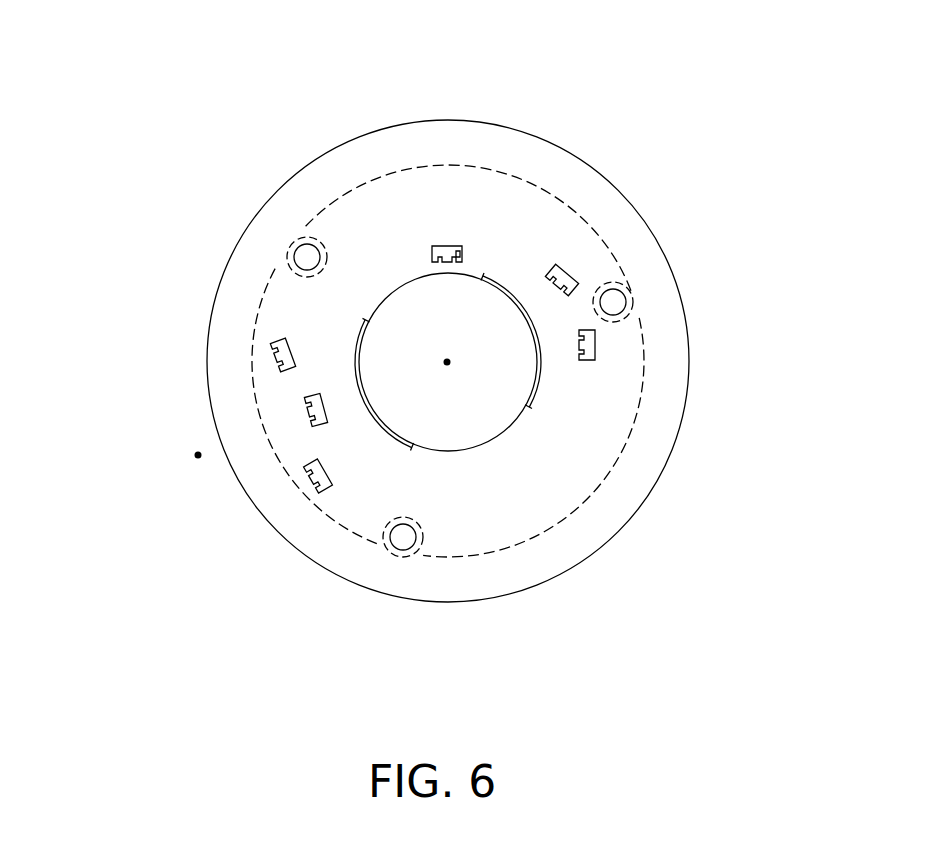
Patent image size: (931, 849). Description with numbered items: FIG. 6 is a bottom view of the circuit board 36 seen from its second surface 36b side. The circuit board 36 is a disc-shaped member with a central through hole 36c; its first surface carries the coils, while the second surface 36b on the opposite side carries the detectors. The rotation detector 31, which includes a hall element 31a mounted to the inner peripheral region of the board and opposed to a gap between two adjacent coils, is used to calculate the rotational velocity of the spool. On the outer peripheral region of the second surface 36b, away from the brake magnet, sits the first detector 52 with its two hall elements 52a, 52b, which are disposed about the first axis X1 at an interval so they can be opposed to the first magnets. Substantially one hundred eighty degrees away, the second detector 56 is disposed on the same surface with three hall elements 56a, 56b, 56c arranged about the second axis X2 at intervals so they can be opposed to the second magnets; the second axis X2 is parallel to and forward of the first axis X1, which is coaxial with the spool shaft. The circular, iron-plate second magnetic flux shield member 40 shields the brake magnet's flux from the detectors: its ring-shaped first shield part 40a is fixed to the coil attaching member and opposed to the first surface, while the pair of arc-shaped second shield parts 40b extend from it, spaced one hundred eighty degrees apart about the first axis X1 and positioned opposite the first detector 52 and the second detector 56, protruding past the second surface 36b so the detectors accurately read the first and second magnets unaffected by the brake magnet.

The circuit board 36 is at (645, 552).
The second surface 36b is at (614, 488).
The through hole 36c is at (392, 293).
The second magnetic flux shield member 40 is at (308, 162).
The first shield part 40a is at (545, 182).
The second shield parts 40b is at (360, 358).
The rotation detector 31 is at (440, 243).
The hall element 31a is at (457, 243).
The first detector 52 is at (737, 174).
The hall element 52a is at (570, 273).
The hall element 52b is at (590, 337).
The second detector 56 is at (126, 347).
The hall element 56a is at (275, 353).
The hall element 56b is at (305, 410).
The hall element 56c is at (310, 478).
The first axis X1 is at (450, 365).
The second axis X2 is at (196, 458).